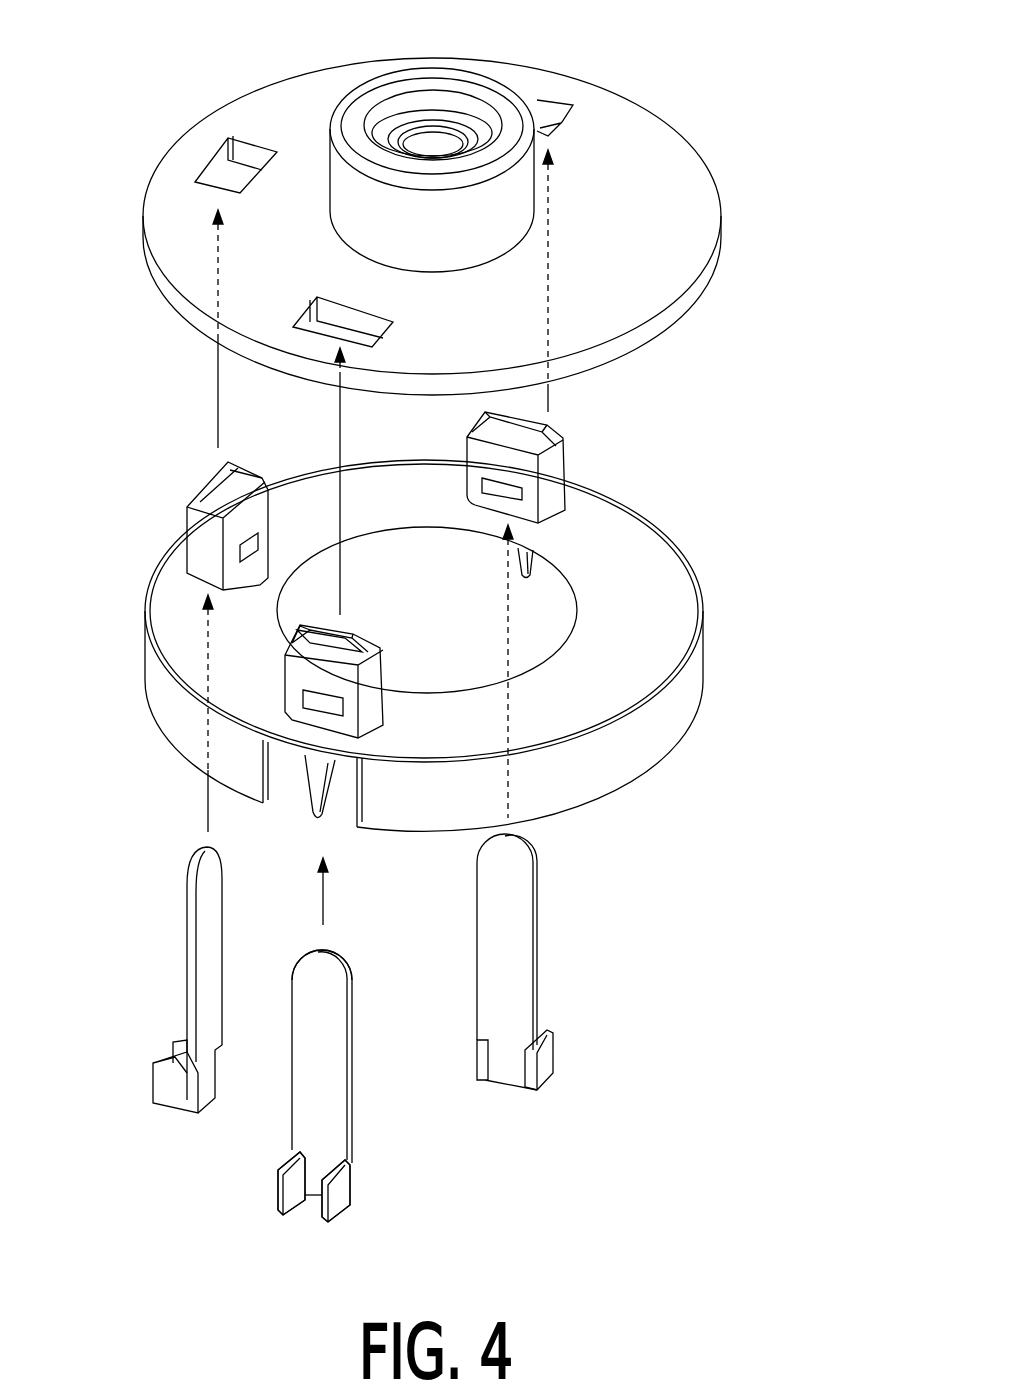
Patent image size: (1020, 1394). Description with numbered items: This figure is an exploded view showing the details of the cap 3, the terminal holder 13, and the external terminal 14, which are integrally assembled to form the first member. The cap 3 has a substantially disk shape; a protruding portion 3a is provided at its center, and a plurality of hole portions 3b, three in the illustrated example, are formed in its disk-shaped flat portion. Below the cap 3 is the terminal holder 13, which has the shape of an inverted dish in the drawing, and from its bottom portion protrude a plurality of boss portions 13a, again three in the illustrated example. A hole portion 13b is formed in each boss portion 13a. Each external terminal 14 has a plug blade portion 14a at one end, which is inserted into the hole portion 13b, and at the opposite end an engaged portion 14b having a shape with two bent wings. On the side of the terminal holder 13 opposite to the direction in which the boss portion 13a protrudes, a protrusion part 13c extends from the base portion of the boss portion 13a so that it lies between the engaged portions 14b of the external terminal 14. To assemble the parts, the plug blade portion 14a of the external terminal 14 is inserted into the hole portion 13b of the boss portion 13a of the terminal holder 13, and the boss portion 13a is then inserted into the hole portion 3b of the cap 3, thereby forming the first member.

The cap 3 is at (675, 182).
The protruding portion 3a is at (398, 90).
The hole portion 3b is at (300, 325).
The terminal holder 13 is at (690, 684).
The boss portion 13a is at (300, 672).
The hole portion 13b is at (328, 628).
The protrusion part 13c is at (305, 797).
The external terminal 14 is at (322, 1065).
The plug blade portion 14a is at (310, 1020).
The engaged portion 14b is at (293, 1207).